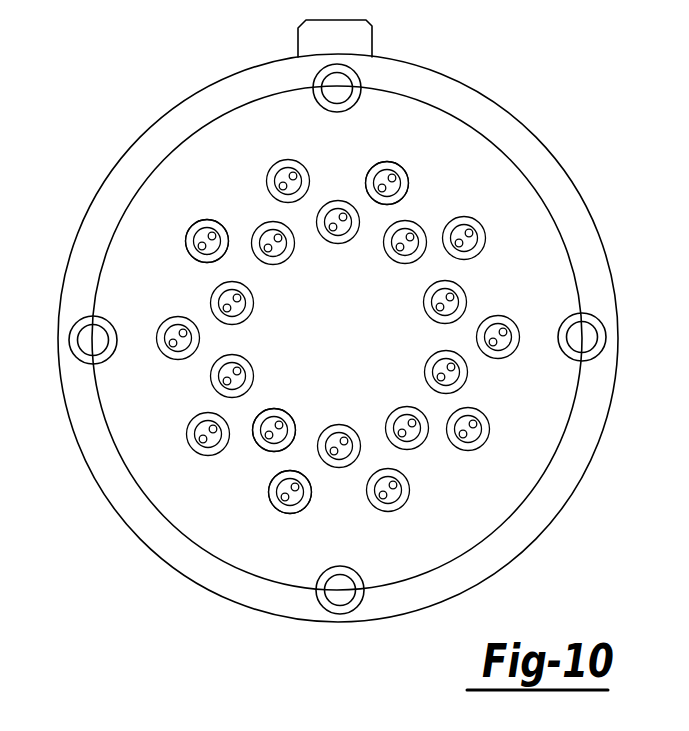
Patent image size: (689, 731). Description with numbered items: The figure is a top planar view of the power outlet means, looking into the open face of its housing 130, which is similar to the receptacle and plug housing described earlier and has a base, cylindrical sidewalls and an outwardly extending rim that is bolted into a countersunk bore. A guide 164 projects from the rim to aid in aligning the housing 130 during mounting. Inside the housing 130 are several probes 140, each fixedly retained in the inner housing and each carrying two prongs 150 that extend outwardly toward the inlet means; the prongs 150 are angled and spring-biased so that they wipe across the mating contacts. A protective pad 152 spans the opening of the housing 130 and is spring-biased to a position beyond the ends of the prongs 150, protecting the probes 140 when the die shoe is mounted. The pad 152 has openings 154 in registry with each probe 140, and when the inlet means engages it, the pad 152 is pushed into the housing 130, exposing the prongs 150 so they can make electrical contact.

The housing 130 is at (323, 317).
The guide 164 is at (372, 23).
The prongs 150 is at (330, 141).
The probe 140 is at (202, 236).
The protective pad 152 is at (365, 329).
The openings 154 is at (404, 174).